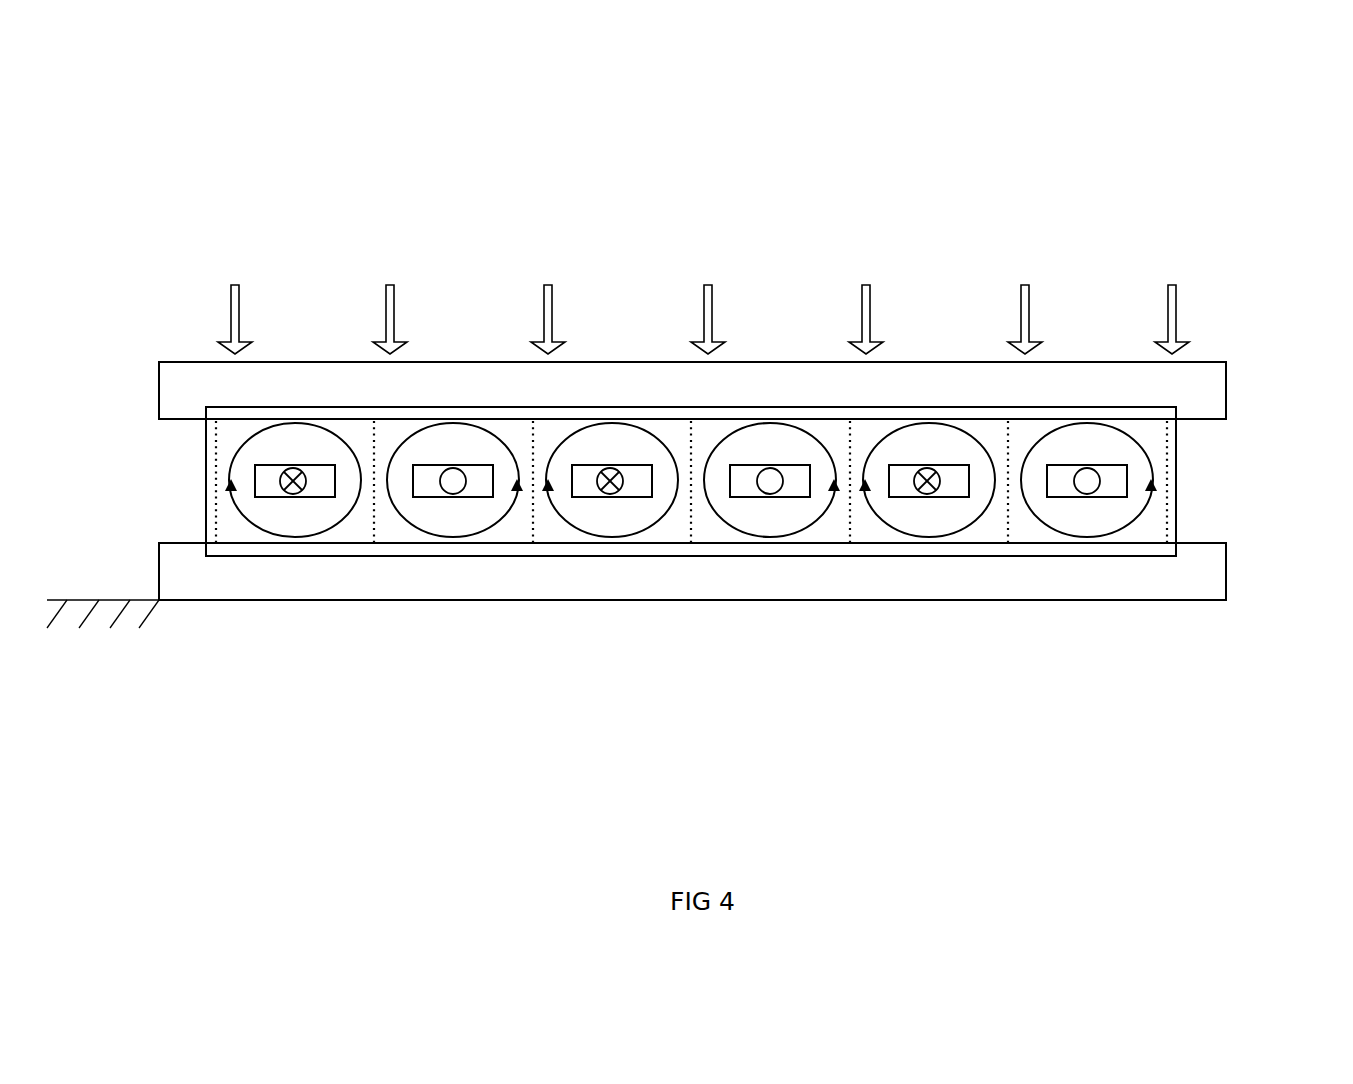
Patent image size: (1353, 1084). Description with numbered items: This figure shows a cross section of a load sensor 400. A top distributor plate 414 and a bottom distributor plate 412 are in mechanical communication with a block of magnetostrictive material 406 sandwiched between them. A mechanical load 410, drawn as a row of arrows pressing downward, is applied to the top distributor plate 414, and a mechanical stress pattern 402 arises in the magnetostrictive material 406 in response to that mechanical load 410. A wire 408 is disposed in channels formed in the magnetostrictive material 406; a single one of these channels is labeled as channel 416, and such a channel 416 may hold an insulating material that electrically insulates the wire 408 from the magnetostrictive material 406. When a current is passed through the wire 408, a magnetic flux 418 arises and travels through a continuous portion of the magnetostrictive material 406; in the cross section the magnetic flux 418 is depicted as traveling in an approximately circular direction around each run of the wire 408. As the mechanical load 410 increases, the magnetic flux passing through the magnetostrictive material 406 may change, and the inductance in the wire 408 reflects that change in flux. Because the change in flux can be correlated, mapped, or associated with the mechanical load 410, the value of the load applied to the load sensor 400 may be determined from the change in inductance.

The load sensor 400 is at (156, 170).
The mechanical stress pattern 402 is at (1171, 442).
The magnetostrictive material 406 is at (1178, 528).
The wire 408 is at (917, 465).
The mechanical load 410 is at (1178, 323).
The bottom distributor plate 412 is at (158, 561).
The top distributor plate 414 is at (158, 393).
The channel 416 is at (435, 497).
The magnetic flux 418 is at (823, 527).